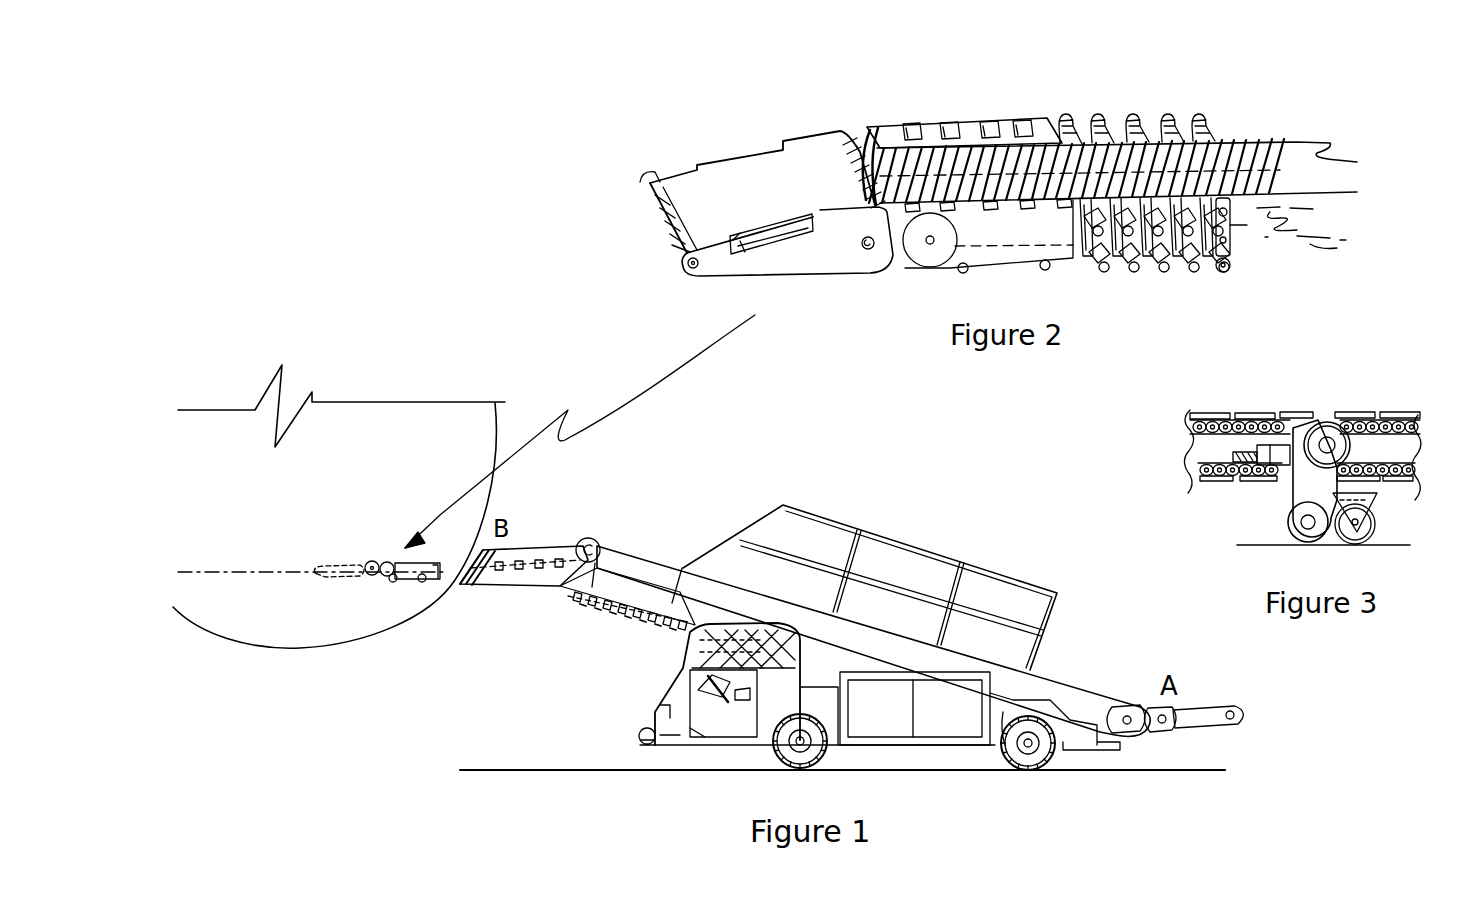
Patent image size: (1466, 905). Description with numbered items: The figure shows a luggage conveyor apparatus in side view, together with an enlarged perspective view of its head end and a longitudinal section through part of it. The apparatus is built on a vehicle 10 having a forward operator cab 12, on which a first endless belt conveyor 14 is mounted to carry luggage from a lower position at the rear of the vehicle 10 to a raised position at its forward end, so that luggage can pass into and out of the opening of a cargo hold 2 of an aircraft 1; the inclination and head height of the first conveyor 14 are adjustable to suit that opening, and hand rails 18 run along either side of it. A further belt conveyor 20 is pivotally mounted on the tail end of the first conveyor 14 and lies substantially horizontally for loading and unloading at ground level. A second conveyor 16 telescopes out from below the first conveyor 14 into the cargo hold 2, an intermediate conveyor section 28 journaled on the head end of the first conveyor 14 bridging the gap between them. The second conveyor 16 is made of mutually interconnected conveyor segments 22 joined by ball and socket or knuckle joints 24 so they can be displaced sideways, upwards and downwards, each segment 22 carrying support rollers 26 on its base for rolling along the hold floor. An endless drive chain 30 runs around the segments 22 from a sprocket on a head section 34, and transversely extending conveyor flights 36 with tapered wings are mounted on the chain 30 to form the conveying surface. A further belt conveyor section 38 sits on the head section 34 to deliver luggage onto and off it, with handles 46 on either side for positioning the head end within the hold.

In FIG. 1, the aircraft 1 is at (203, 625).
In FIG. 1, the cargo hold 2 is at (323, 527).
In FIG. 1, the vehicle 10 is at (720, 738).
In FIG. 1, the forward operator cab 12 is at (673, 684).
In FIG. 1, the first endless belt conveyor 14 is at (637, 545).
In FIG. 1, the second conveyor 16 is at (515, 567).
In FIG. 2, the second conveyor 16 is at (1198, 80).
In FIG. 1, the hand rails 18 is at (884, 520).
In FIG. 1, the further belt conveyor 20 is at (1213, 702).
In FIG. 2, the conveyor segments 22 is at (1232, 236).
In FIG. 3, the conveyor segments 22 is at (1293, 485).
In FIG. 3, the ball and socket or knuckle joints 24 is at (1293, 430).
In FIG. 2, the support rollers 26 is at (1203, 275).
In FIG. 3, the support rollers 26 is at (1310, 525).
In FIG. 1, the intermediate conveyor section 28 is at (563, 545).
In FIG. 3, the endless drive chain 30 is at (1385, 427).
In FIG. 1, the head section 34 is at (410, 578).
In FIG. 2, the head section 34 is at (1003, 252).
In FIG. 2, the conveyor flights 36 is at (1253, 143).
In FIG. 3, the conveyor flights 36 is at (1290, 415).
In FIG. 1, the further belt conveyor section 38 is at (362, 560).
In FIG. 2, the further belt conveyor section 38 is at (740, 182).
In FIG. 2, the handles 46 is at (806, 232).